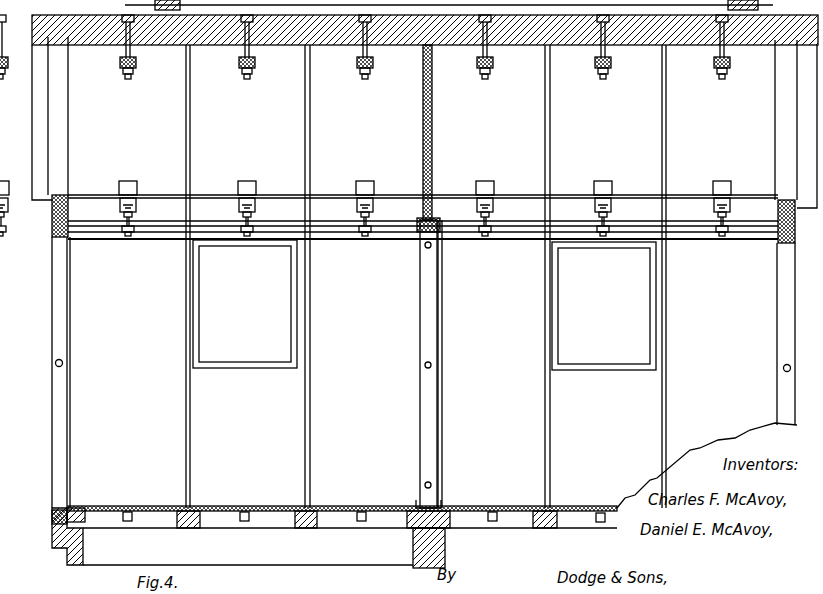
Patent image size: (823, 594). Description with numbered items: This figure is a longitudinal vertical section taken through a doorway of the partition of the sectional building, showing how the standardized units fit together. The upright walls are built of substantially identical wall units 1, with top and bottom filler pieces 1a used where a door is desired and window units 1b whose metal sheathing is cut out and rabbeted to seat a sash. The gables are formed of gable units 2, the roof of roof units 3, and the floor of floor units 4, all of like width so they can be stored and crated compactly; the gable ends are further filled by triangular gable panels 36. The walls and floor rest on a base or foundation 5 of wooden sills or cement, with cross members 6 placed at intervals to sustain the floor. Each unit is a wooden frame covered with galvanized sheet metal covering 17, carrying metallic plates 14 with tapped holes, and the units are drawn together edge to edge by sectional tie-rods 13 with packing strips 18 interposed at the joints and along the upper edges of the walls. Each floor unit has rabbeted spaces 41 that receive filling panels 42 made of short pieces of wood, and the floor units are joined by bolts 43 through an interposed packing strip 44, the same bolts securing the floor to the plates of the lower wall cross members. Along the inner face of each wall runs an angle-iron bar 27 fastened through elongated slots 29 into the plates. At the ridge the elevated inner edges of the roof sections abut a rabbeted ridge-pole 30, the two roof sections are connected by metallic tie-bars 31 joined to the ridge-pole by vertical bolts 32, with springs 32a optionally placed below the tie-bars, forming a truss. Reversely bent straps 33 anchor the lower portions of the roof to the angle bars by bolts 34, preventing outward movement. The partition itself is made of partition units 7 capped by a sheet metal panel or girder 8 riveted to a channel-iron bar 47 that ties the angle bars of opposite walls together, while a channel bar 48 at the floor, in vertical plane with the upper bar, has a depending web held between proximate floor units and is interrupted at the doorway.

The wall unit 1 is at (416, 299).
The filler piece 1a is at (53, 222).
The window unit 1b is at (424, 330).
The gable unit 2 is at (422, 126).
The roof unit 3 is at (245, 148).
The floor unit 4 is at (151, 513).
The base or foundation 5 is at (85, 543).
The cross member 6 is at (412, 544).
The partition unit 7 is at (778, 288).
The sheet metal panel or girder 8 is at (433, 134).
The tie-rod section 13 is at (72, 364).
The metallic plate 14 is at (127, 238).
The sheet metal covering 17 is at (220, 529).
The packing strip 18 is at (191, 126).
The angle-iron bar 27 is at (165, 241).
The slot 29 is at (120, 237).
The ridge-pole 30 is at (215, 45).
The tie-bar 31 is at (364, 66).
The vertical bolt 32 is at (375, 64).
The spring 32a is at (136, 75).
The strap or tie-member 33 is at (131, 182).
The bolt 34 is at (138, 223).
The gable unit section or panel 36 is at (64, 104).
The rabbet 41 is at (78, 508).
The filling panel 42 is at (212, 511).
The bolt 43 is at (99, 506).
The packing strip 44 is at (62, 512).
The channel-iron bar 47 is at (433, 216).
The channel bar 48 is at (446, 509).